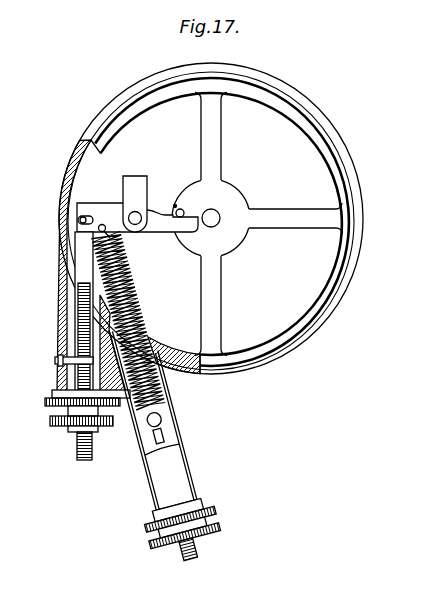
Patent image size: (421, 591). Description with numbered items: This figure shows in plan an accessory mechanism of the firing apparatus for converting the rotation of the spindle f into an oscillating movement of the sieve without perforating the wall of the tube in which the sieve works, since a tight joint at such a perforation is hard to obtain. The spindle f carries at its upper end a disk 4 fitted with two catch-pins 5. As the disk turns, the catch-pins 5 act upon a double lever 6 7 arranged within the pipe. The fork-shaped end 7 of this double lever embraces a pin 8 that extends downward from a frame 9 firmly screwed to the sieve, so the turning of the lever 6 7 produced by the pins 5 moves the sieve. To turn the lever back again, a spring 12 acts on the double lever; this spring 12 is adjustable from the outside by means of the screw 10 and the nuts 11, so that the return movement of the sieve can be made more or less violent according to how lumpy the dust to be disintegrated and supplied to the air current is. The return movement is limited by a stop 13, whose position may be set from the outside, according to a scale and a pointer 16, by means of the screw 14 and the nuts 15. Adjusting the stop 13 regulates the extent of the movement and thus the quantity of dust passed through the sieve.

The disk 4 is at (238, 246).
The spindle f is at (222, 211).
The catch-pins 5 is at (182, 210).
The double lever 6 is at (164, 232).
The fork-shaped end of double lever 7 is at (98, 207).
The pin 8 is at (78, 220).
The frame 9 is at (218, 314).
The screw 10 is at (194, 548).
The nuts 11 is at (203, 508).
The spring 12 is at (123, 279).
The stop 13 is at (70, 242).
The screw 14 is at (97, 447).
The nuts 15 is at (52, 405).
The pointer 16 is at (60, 362).